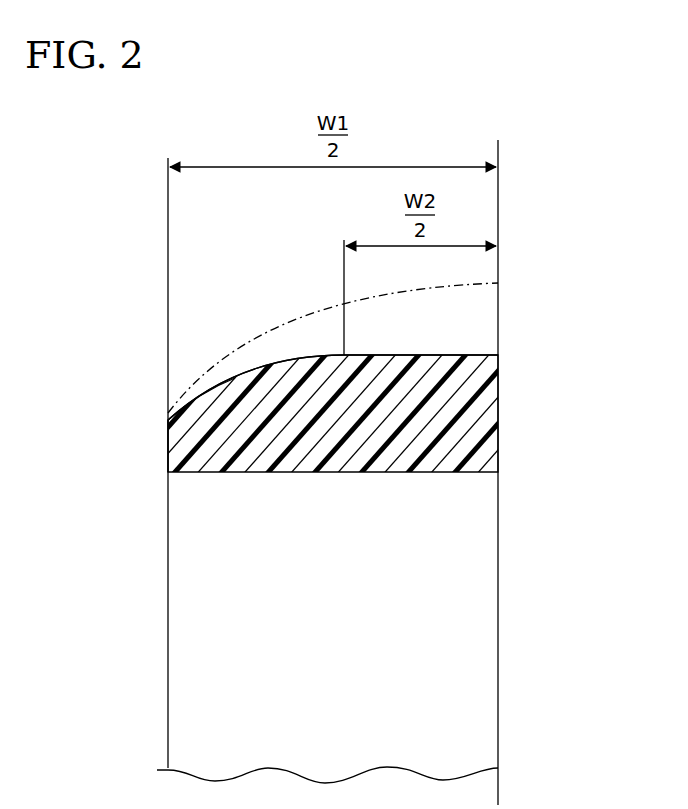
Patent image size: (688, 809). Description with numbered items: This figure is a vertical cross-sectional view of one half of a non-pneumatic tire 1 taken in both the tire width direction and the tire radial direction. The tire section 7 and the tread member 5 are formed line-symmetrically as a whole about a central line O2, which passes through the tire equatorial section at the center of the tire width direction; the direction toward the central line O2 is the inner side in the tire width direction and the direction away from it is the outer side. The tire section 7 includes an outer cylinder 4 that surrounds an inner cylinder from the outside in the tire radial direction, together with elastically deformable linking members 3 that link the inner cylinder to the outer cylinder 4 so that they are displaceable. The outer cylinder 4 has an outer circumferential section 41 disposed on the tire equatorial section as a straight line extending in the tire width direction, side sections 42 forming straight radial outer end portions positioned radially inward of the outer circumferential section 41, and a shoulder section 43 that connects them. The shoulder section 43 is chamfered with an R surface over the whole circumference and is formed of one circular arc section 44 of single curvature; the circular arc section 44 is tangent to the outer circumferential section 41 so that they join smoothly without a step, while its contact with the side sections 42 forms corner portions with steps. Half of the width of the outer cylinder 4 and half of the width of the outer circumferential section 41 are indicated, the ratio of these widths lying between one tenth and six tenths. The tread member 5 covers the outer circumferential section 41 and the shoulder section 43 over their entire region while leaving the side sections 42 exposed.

The glass article 1 is at (390, 438).
The linking members 3 is at (197, 583).
The outer cylinder 4 is at (208, 469).
The tread member 5 is at (203, 370).
The tire section 7 is at (332, 511).
The outer circumferential section 41 is at (458, 355).
The side sections 42 is at (168, 440).
The shoulder section 43 is at (287, 358).
The circular arc section 44 is at (222, 385).
The central line O2 is at (498, 784).